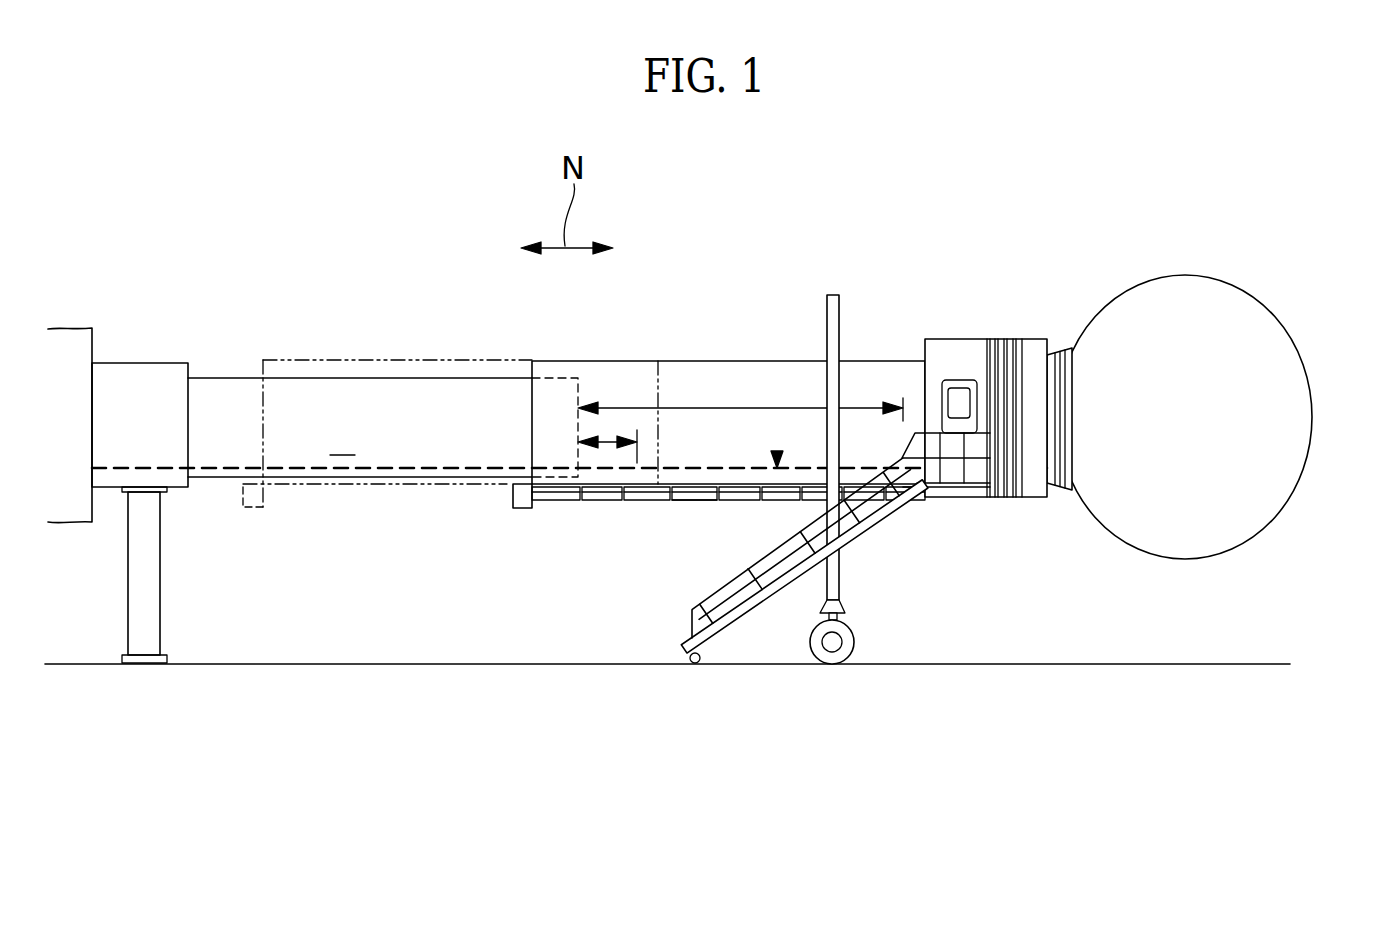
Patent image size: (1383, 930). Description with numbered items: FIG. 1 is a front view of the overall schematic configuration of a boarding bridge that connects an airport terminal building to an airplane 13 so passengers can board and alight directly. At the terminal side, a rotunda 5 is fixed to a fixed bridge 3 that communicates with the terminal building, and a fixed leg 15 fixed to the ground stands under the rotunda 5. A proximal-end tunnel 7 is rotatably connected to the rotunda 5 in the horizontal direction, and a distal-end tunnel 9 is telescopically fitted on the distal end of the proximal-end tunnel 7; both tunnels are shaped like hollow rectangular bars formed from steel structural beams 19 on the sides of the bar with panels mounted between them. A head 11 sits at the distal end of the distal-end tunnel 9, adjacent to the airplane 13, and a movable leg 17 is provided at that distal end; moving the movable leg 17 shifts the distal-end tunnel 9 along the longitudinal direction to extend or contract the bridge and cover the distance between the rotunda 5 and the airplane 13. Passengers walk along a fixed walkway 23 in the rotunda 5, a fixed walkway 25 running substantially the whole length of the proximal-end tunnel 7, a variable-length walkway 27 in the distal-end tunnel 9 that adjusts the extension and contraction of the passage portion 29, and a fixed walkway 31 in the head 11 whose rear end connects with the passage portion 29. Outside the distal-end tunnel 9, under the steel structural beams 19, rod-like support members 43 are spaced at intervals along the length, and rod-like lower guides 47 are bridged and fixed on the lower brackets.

The fixed bridge 3 is at (70, 337).
The rotunda 5 is at (146, 362).
The proximal-end tunnel 7 is at (224, 377).
The distal-end tunnel 9 is at (426, 359).
The head 11 is at (965, 338).
The airplane 13 is at (1284, 322).
The fixed leg 15 is at (160, 583).
The movable leg 17 is at (840, 580).
The steel structural beams 19 is at (553, 496).
The fixed walkway 23 is at (139, 467).
The fixed walkway 25 is at (338, 455).
The variable-length walkway 27 is at (777, 452).
The passage portion 29 is at (606, 441).
The fixed walkway 31 is at (1030, 464).
The support members 43 is at (622, 501).
The lower guides 47 is at (687, 501).